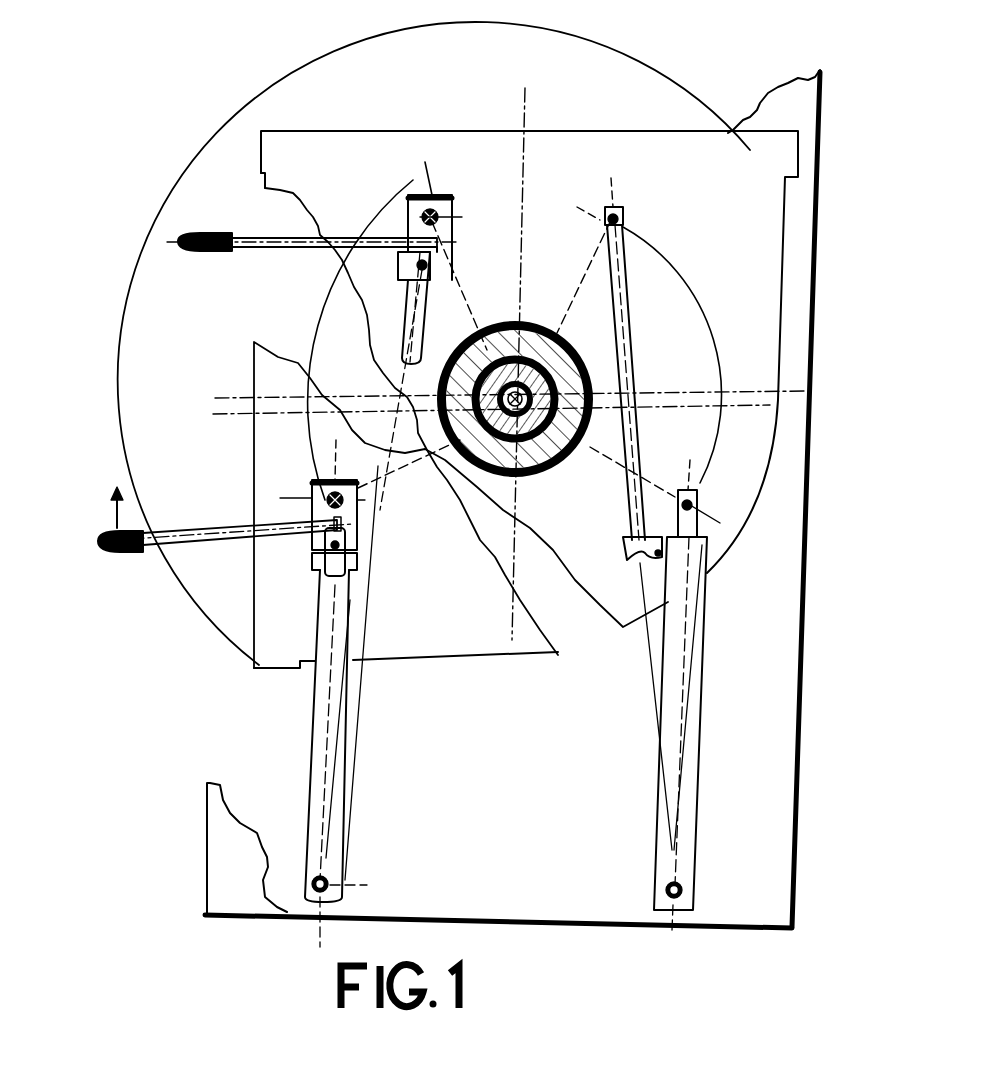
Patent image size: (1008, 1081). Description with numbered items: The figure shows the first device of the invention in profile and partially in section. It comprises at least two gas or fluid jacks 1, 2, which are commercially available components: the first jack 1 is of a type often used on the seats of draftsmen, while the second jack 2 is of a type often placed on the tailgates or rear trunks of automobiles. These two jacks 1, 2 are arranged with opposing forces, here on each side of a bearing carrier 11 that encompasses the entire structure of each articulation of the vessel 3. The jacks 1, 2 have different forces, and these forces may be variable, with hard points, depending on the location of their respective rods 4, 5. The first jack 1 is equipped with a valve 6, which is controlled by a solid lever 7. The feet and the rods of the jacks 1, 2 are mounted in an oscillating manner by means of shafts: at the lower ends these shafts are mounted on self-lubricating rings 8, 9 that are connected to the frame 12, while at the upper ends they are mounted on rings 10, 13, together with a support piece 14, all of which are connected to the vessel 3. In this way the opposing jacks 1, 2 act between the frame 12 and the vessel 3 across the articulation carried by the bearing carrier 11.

The first jack 1 is at (320, 693).
The second jack 2 is at (690, 642).
The vessel 3 is at (268, 546).
The rod 4 is at (417, 323).
The rod 5 is at (627, 325).
The valve 6 is at (275, 543).
The solid lever 7 is at (390, 239).
The self-lubricating ring 8 is at (310, 882).
The self-lubricating ring 9 is at (640, 888).
The ring 10 is at (400, 210).
The bearing carrier 11 is at (592, 387).
The frame 12 is at (225, 827).
The ring 13 is at (617, 216).
The support piece 14 is at (408, 200).